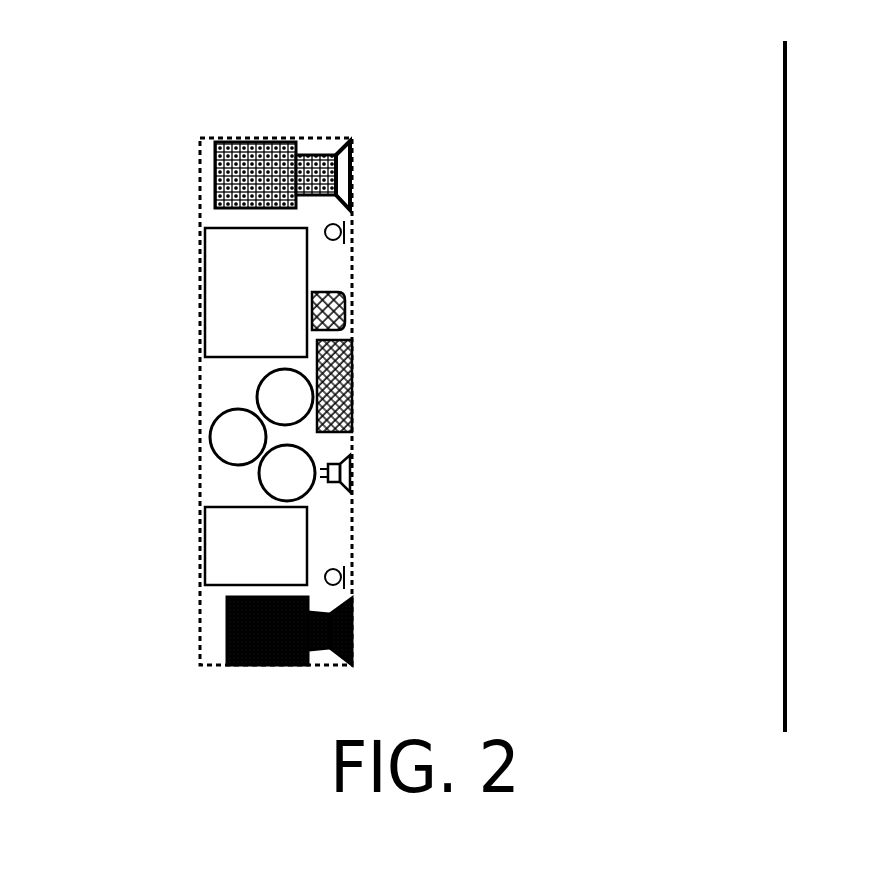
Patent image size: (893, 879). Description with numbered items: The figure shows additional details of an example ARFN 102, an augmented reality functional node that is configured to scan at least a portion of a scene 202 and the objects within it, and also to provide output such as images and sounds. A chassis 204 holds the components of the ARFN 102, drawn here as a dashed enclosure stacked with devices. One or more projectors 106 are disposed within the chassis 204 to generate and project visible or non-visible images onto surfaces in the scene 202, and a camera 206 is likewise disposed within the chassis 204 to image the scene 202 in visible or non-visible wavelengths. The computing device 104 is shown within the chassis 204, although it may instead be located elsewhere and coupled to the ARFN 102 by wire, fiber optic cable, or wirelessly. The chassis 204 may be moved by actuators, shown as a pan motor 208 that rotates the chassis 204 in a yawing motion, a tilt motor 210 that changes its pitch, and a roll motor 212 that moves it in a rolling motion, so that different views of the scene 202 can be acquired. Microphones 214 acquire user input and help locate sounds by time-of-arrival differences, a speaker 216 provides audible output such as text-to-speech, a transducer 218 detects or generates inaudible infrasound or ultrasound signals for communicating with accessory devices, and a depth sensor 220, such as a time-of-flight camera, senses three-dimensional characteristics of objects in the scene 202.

The ARFN 102 is at (216, 137).
The computing device 104 is at (225, 263).
The projector 106 is at (208, 556).
The scene 202 is at (785, 52).
The chassis 204 is at (315, 137).
The camera 206 is at (227, 635).
The pan motor 208 is at (257, 390).
The tilt motor 210 is at (212, 432).
The roll motor 212 is at (258, 475).
The microphone 214 is at (344, 228).
The speaker 216 is at (350, 470).
The transducer 218 is at (345, 310).
The depth sensor 220 is at (352, 383).